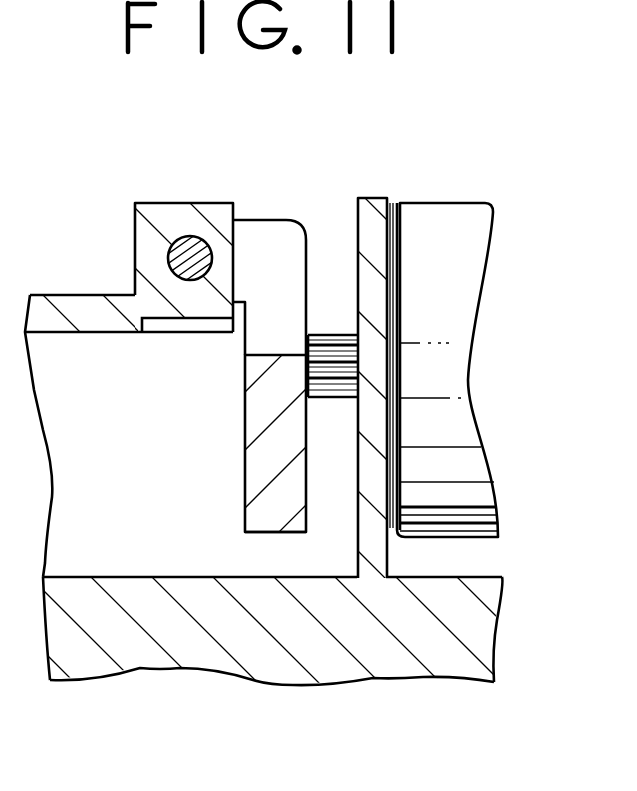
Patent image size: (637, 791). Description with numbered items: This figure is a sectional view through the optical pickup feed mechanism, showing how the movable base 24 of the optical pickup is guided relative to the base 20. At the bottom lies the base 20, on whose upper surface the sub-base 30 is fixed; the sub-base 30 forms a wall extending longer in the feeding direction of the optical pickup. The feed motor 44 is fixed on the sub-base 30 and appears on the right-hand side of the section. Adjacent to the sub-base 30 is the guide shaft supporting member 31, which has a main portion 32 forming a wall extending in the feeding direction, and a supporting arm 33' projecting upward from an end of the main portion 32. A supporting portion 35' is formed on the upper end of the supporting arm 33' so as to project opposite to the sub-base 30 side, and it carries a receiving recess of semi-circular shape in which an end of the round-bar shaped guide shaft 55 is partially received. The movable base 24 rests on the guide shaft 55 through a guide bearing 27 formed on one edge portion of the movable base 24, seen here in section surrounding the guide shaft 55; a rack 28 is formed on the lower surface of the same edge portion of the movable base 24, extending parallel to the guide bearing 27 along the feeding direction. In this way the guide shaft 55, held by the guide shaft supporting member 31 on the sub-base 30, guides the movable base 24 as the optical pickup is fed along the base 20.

The base 20 is at (147, 645).
The movable base 24 is at (70, 303).
The guide bearing 27 is at (162, 210).
The rack 28 is at (208, 325).
The sub-base 30 is at (373, 200).
The guide shaft supporting member 31 is at (263, 525).
The main portion 32 is at (287, 473).
The supporting arm 33' is at (434, 328).
The supporting portion 35' is at (269, 243).
The feed motor 44 is at (450, 325).
The guide shaft 55 is at (175, 272).